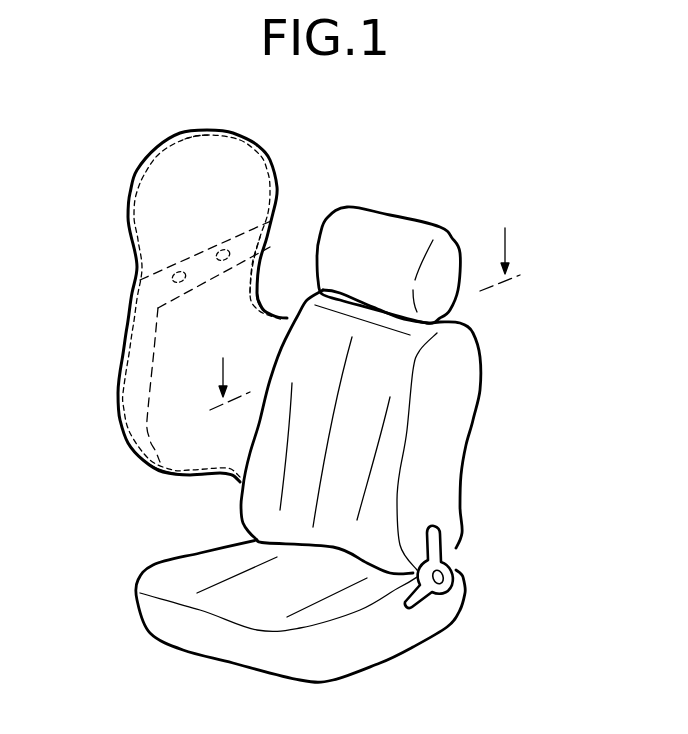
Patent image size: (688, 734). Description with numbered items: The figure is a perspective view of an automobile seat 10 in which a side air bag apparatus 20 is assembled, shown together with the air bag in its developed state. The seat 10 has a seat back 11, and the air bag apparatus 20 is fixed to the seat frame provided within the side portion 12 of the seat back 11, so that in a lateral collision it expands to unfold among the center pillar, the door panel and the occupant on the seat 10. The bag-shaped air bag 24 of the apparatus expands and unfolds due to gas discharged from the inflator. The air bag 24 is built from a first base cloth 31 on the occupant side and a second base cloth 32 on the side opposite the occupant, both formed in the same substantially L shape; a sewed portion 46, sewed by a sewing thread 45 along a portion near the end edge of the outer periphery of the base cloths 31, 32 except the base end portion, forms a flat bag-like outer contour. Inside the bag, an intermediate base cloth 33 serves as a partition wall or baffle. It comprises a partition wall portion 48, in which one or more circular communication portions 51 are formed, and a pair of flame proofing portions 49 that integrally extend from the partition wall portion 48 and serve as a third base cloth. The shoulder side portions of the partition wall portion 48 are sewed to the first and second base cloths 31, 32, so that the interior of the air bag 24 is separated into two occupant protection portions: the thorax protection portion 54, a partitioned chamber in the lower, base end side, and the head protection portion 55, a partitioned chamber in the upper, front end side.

The seat 10 is at (497, 415).
The seat back 11 is at (447, 317).
The side portion 12 is at (297, 300).
The air bag apparatus 20 is at (269, 149).
The air bag 24 is at (273, 165).
The first base cloth 31 is at (216, 150).
The second base cloth 32 is at (192, 152).
The intermediate base cloth 33 is at (145, 278).
The sewing thread 45 is at (131, 243).
The sewed portion 46 is at (124, 208).
The partition wall portion 48 is at (250, 233).
The flame proofing portions 49 is at (133, 400).
The communication portions 51 is at (225, 243).
The thorax protection portion 54 is at (174, 458).
The head protection portion 55 is at (150, 178).